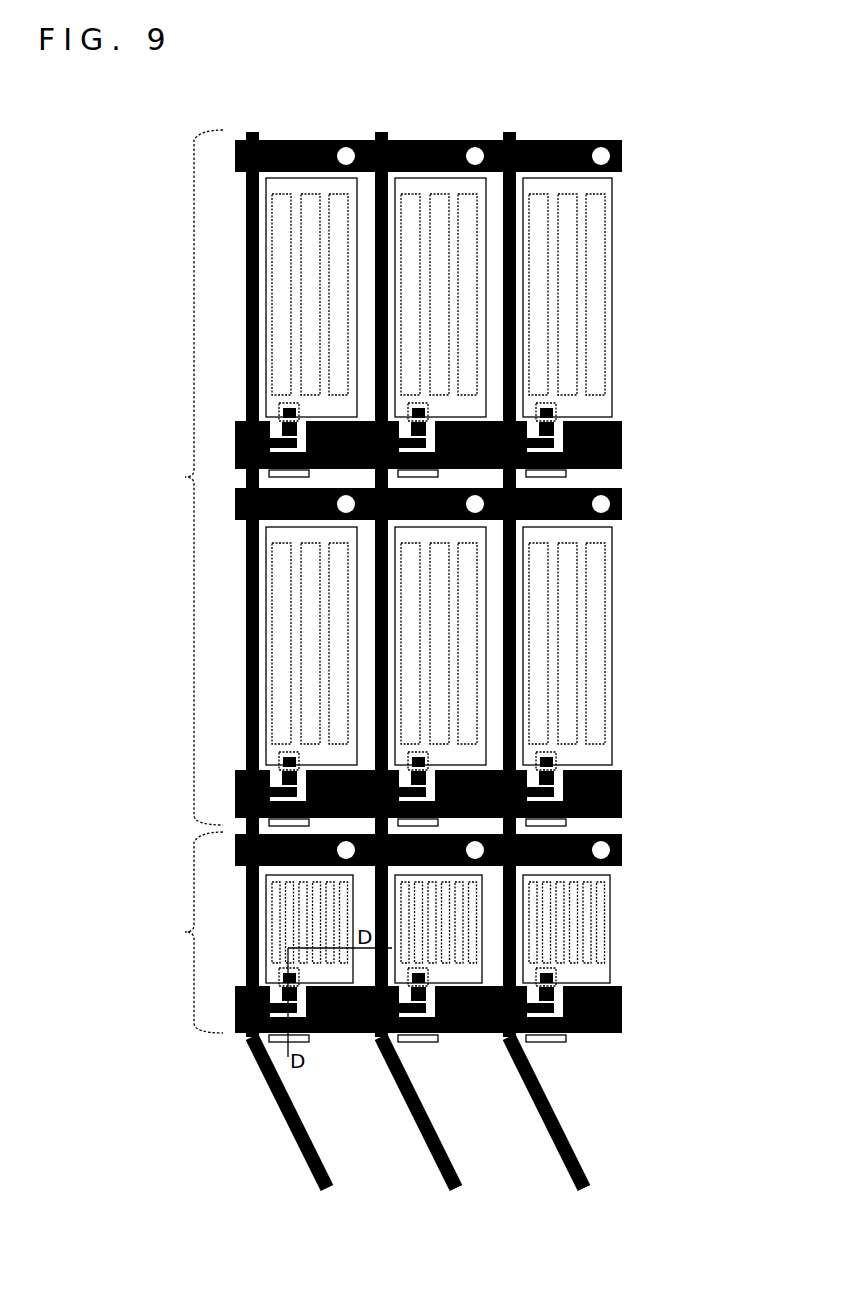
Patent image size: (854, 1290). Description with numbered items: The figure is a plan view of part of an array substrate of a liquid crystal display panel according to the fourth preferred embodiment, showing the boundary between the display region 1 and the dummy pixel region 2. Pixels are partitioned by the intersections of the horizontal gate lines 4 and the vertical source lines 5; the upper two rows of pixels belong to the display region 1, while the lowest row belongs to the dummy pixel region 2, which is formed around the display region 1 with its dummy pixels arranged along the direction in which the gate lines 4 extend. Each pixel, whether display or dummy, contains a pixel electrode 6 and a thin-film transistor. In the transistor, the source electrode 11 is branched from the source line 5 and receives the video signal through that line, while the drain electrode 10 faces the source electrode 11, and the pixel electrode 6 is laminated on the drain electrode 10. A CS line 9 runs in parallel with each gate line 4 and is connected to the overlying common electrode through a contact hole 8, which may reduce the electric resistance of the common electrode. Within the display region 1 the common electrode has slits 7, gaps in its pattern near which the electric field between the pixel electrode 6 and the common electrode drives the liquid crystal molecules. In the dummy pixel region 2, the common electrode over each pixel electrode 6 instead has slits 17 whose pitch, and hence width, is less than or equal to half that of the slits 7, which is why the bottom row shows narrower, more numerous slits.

The display region 1 is at (185, 477).
The dummy pixel region 2 is at (185, 932).
The gate line 4 is at (617, 770).
The source line 5 is at (247, 697).
The pixel electrode 6 is at (602, 692).
The slit 7 is at (592, 617).
The contact hole 8 is at (620, 496).
The CS line 9 is at (593, 488).
The drain electrode 10 is at (538, 797).
The source electrode 11 is at (598, 866).
The slit 17 is at (568, 920).